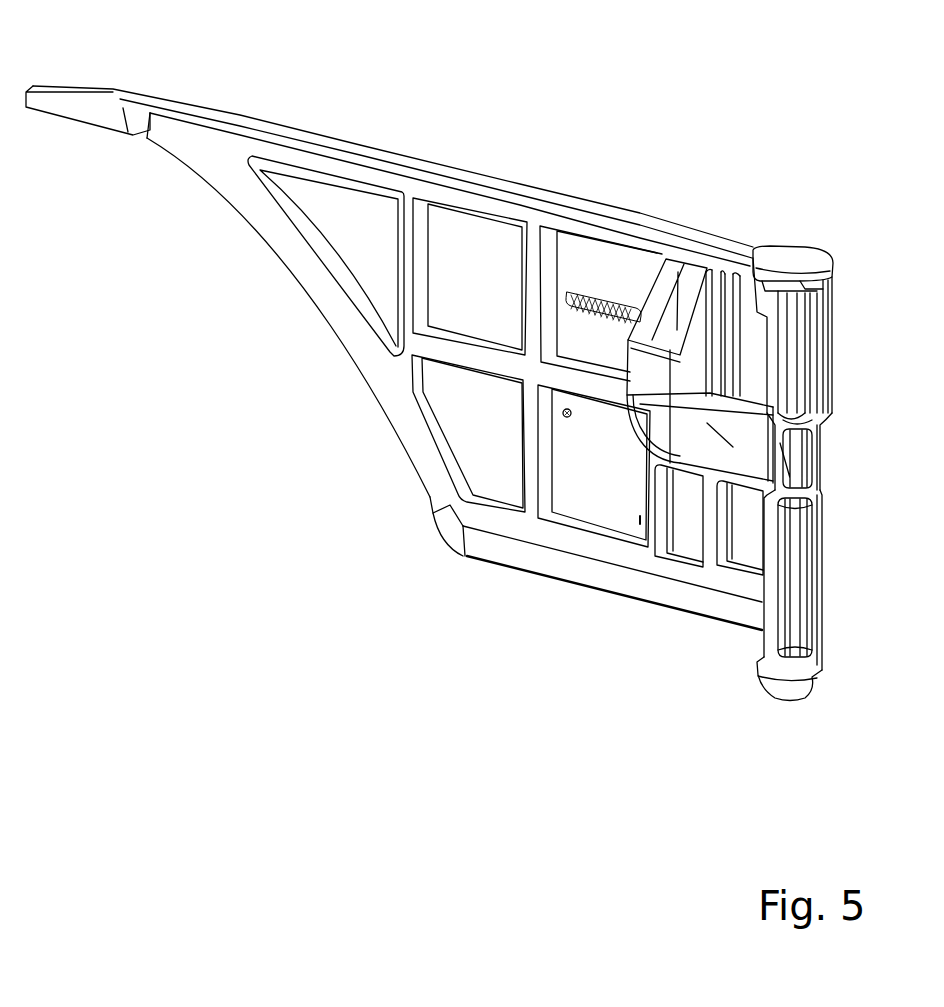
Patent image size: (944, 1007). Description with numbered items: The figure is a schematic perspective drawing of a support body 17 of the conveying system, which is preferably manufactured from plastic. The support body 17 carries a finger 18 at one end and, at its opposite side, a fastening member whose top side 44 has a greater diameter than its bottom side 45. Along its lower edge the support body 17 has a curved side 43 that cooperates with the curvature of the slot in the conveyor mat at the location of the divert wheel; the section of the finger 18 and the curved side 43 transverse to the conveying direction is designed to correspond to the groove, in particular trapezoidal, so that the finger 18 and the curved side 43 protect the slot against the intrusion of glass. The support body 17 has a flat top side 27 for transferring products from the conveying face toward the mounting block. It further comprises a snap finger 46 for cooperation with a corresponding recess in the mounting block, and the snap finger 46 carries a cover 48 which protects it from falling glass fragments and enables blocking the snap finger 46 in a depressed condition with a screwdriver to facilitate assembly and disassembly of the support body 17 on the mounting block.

The support body 17 is at (505, 393).
The finger 18 is at (73, 108).
The flat top side 27 is at (505, 190).
The curved side 43 is at (320, 302).
The top side 44 is at (827, 273).
The bottom side 45 is at (810, 660).
The snap finger 46 is at (704, 443).
The cover 48 is at (645, 418).